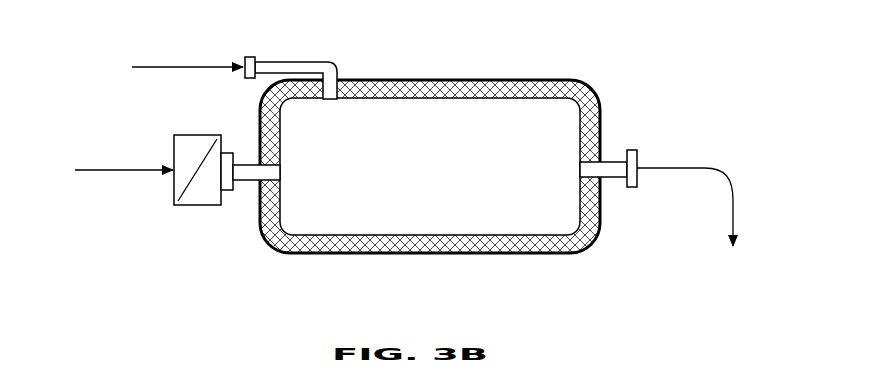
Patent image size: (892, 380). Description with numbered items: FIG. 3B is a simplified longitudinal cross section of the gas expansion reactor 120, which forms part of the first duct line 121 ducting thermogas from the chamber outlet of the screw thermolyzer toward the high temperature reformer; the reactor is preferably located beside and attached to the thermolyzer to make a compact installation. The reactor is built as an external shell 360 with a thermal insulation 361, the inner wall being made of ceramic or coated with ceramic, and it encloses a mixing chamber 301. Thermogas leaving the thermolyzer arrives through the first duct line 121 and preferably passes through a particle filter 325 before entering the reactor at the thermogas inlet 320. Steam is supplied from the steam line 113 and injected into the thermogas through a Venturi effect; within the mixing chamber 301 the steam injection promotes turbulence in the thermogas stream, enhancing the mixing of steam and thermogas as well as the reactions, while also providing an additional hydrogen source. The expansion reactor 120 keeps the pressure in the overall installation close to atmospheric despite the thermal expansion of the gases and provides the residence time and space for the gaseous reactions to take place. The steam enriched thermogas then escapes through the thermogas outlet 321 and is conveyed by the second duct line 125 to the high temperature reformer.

The steam line 113 is at (180, 66).
The gas expansion reactor 120 is at (453, 151).
The first duct line 121 is at (100, 170).
The second duct line 125 is at (683, 164).
The mixing chamber 301 is at (453, 185).
The thermogas inlet 320 is at (255, 182).
The thermogas outlet 321 is at (603, 178).
The particle filter 325 is at (196, 207).
The external shell 360 is at (397, 80).
The thermal insulation 361 is at (592, 144).